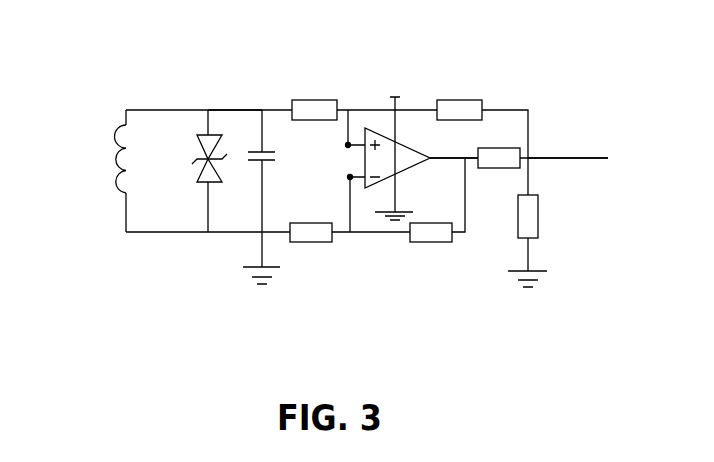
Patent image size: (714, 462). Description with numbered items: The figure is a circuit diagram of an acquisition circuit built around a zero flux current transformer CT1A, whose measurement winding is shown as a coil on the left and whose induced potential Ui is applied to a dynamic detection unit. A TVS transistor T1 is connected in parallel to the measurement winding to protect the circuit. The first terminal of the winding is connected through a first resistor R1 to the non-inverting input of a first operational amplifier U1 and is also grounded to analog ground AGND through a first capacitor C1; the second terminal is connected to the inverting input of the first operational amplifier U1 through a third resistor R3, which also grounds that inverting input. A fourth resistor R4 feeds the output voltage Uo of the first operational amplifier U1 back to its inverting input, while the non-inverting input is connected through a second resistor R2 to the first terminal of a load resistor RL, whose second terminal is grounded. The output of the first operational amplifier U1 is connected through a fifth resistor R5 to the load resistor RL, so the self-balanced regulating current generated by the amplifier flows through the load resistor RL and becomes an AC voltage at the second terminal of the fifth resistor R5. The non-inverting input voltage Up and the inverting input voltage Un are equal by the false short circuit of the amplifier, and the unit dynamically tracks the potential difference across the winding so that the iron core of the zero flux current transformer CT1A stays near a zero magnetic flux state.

The zero flux current transformer CT1A is at (90, 159).
The TVS transistor T1 is at (197, 171).
The input voltage Ui is at (229, 95).
The first resistor R1 is at (297, 100).
The first capacitor C1 is at (273, 188).
The analog ground AGND is at (393, 293).
The non-inverting input voltage Up is at (340, 134).
The inverting input voltage Un is at (340, 198).
The first operational amplifier U1 is at (399, 154).
The output voltage Uo is at (454, 174).
The second resistor R2 is at (476, 100).
The fifth resistor R5 is at (499, 145).
The load resistor RL is at (544, 233).
The third resistor R3 is at (311, 248).
The fourth resistor R4 is at (431, 248).